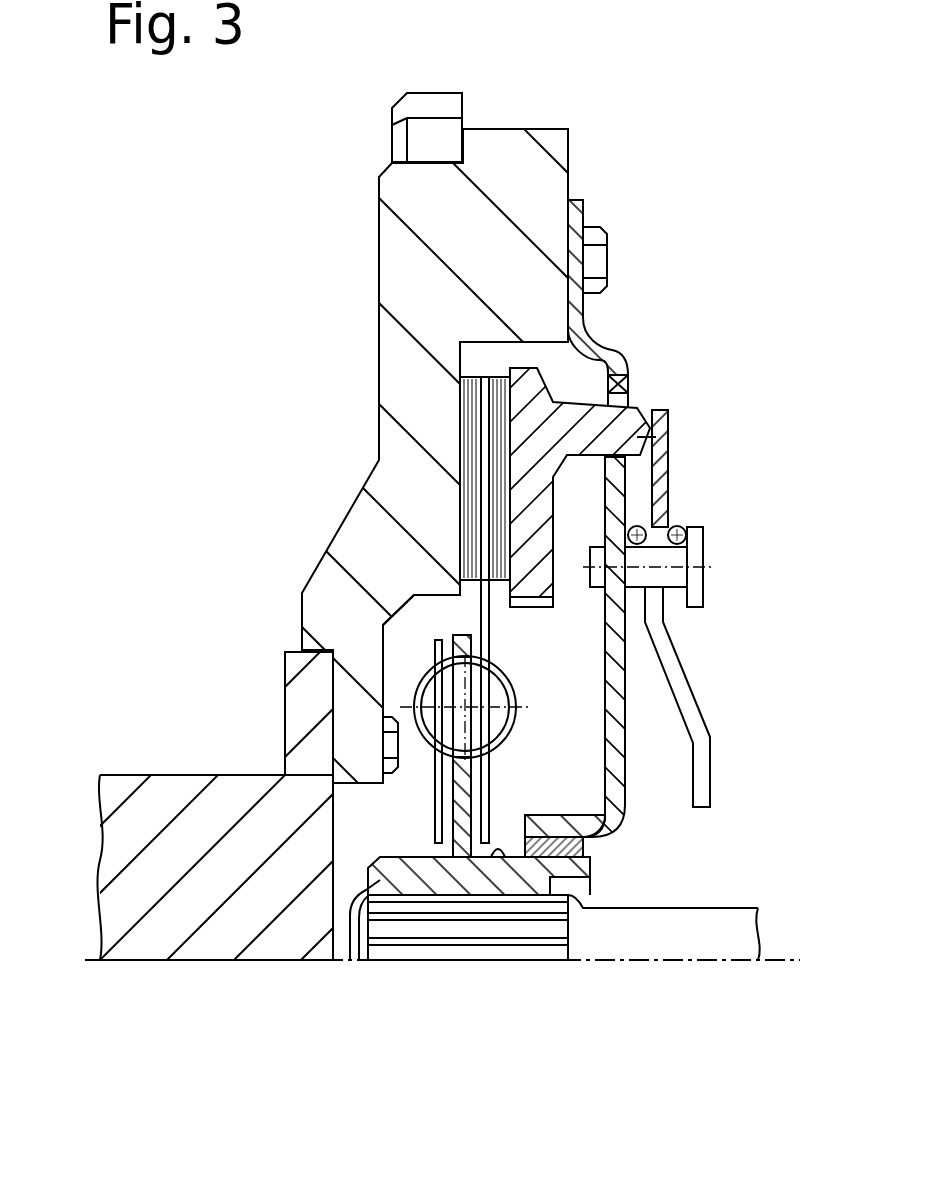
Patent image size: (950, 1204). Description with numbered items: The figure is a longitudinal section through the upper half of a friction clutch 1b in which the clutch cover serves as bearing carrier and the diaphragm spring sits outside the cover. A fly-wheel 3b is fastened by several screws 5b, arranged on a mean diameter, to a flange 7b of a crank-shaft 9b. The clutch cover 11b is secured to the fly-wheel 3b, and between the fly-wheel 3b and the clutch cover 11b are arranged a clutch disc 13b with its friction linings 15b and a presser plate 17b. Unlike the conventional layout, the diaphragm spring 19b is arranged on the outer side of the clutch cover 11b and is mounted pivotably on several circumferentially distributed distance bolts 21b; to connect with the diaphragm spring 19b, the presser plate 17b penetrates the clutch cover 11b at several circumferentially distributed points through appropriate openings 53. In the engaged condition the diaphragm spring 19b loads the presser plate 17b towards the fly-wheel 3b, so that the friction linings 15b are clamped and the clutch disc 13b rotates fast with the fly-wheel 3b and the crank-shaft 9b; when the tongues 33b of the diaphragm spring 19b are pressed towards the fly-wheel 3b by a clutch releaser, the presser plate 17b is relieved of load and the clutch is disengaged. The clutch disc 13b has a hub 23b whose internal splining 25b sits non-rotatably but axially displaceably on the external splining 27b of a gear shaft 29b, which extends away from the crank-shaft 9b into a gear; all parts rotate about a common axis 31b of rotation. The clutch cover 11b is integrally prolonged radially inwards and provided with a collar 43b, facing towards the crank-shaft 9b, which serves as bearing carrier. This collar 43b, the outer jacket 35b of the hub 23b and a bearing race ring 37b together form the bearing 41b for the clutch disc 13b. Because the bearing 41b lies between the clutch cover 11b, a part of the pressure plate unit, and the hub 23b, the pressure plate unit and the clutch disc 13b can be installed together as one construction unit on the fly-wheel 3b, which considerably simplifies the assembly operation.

The friction clutch 1b is at (631, 154).
The fly-wheel 3b is at (405, 278).
The screws 5b is at (392, 748).
The flange 7b is at (300, 711).
The crank-shaft 9b is at (155, 858).
The clutch cover 11b is at (617, 492).
The clutch disc 13b is at (413, 630).
The friction linings 15b is at (493, 503).
The presser plate 17b is at (628, 372).
The diaphragm spring 19b is at (662, 455).
The distance bolts 21b is at (673, 557).
The hub 23b is at (518, 872).
The internal splining 25b is at (345, 932).
The external splining 27b is at (455, 930).
The gear shaft 29b is at (640, 932).
The axis of rotation 31b is at (768, 962).
The tongues of the diaphragm spring 33b is at (683, 666).
The outer jacket 35b is at (500, 858).
The bearing race ring 37b is at (583, 850).
The bearing 41b is at (605, 862).
The collar 43b is at (585, 825).
The openings 53 is at (622, 402).